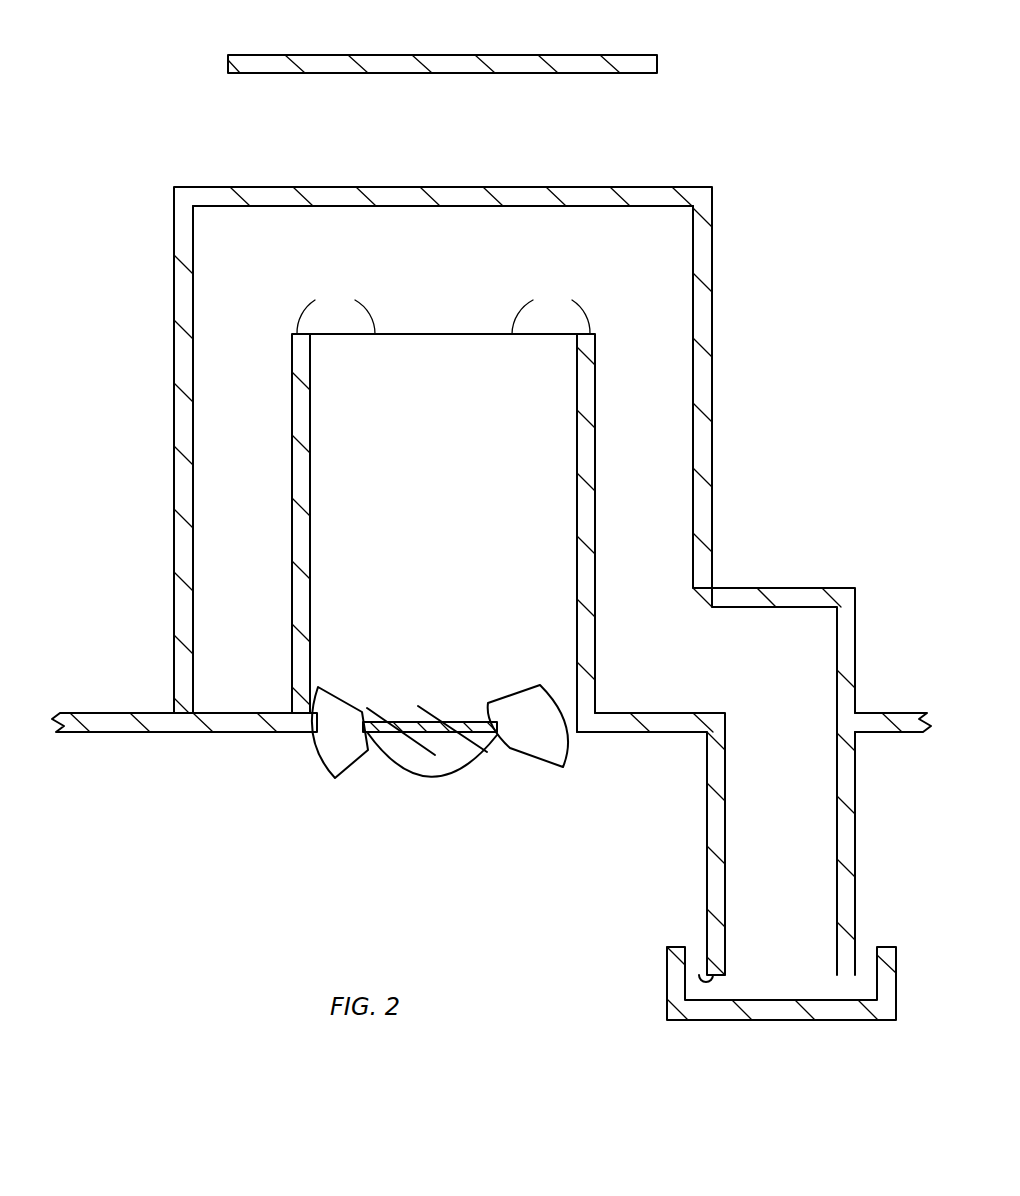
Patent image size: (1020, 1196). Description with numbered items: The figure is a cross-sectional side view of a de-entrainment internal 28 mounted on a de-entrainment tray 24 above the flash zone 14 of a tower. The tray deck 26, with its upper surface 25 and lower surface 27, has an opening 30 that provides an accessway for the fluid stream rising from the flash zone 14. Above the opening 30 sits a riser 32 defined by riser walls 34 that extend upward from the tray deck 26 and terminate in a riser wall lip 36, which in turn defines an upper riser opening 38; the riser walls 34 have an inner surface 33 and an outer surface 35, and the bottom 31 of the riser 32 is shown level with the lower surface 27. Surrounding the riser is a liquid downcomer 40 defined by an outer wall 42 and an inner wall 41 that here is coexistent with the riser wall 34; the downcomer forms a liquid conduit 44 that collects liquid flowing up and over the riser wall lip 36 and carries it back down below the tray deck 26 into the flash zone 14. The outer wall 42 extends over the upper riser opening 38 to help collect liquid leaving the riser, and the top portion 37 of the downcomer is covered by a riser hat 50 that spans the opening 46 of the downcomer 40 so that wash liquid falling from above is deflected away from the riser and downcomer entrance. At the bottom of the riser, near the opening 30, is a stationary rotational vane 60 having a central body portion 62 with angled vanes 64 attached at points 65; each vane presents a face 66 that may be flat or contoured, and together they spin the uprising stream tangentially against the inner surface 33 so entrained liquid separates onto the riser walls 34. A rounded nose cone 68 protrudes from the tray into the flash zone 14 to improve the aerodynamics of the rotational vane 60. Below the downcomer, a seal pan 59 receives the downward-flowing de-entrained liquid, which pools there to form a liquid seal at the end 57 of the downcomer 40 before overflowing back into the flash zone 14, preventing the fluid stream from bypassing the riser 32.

The flash zone 14 is at (422, 895).
The de-entrainment tray 24 is at (482, 792).
The upper surface of tray deck 25 is at (180, 708).
The tray deck 26 is at (96, 712).
The lower surface of tray deck 27 is at (150, 732).
The de-entrainment internal 28 is at (455, 556).
The opening 30 is at (577, 738).
The bottom of riser 31 is at (313, 732).
The riser 32 is at (445, 533).
The inner surface of riser walls 33 is at (575, 455).
The riser walls 34 is at (296, 404).
The outer surface of riser walls 35 is at (598, 452).
The riser wall lip 36 is at (443, 305).
The housing top wall 37 is at (478, 178).
The upper riser opening 38 is at (456, 322).
The liquid downcomer 40 is at (470, 590).
The inner wall of liquid downcomer 41 is at (292, 600).
The outer wall of liquid downcomer 42 is at (185, 416).
The liquid conduit 44 is at (244, 482).
The opening of downcomer 46 is at (334, 245).
The riser hat 50 is at (440, 53).
The end of downcomer 57 is at (698, 960).
The seal pan 59 is at (667, 978).
The rotational vane 60 is at (440, 716).
The central body portion 62 is at (415, 706).
The vanes 64 is at (325, 703).
The attachment points 65 is at (487, 733).
The face of vanes 66 is at (356, 734).
The nose cone 68 is at (438, 777).